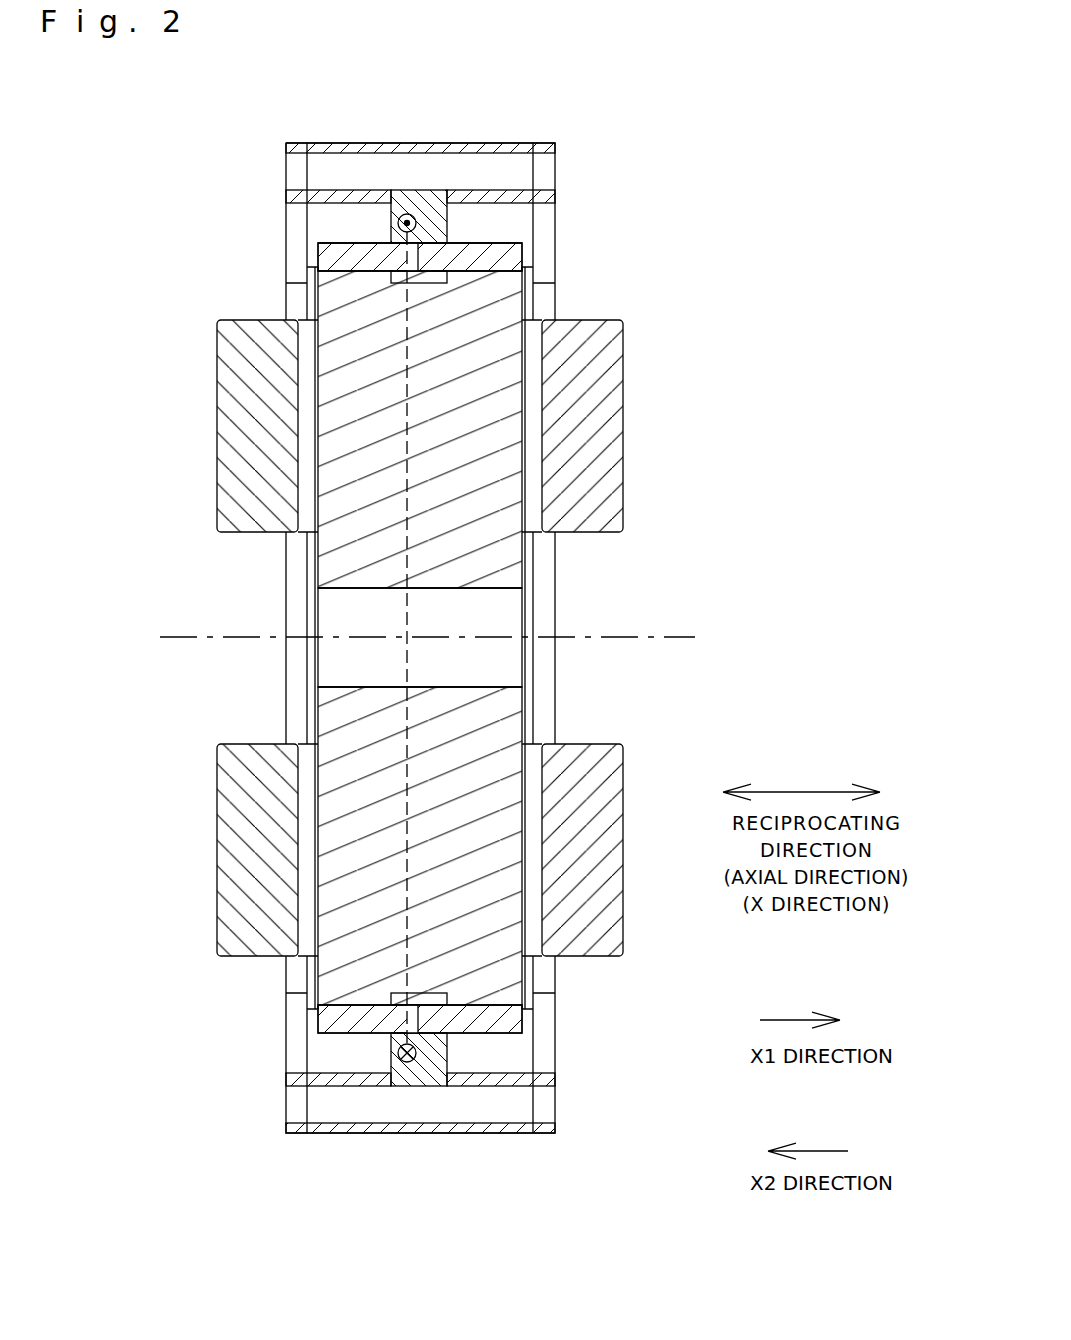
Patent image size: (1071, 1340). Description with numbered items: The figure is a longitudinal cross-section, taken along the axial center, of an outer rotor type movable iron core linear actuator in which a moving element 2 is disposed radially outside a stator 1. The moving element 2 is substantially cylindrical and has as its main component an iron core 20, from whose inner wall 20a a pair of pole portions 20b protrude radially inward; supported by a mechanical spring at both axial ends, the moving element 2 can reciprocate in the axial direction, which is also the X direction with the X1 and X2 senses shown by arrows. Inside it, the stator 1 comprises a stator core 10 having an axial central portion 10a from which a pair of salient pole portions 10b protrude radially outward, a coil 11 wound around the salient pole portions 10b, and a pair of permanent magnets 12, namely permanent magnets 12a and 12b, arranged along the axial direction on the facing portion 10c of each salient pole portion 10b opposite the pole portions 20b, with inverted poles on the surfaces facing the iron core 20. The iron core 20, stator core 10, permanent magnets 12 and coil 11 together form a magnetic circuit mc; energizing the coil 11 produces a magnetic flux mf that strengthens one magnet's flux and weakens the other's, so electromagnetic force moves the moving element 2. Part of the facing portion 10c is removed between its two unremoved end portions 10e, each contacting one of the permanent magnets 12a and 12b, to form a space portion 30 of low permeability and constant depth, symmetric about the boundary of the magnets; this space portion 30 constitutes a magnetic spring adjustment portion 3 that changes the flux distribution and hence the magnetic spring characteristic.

The stator 1 is at (492, 642).
The moving element 2 is at (455, 642).
The magnetic spring adjustment portion 3 is at (465, 663).
The stator core 10 is at (426, 640).
The axial central portion 10a is at (505, 603).
The salient pole portion 10b is at (340, 430).
The facing portion 10c is at (536, 300).
The end portion 10e is at (315, 295).
The coil 11 is at (235, 378).
The permanent magnet 12 is at (419, 663).
The permanent magnet 12a is at (313, 258).
The permanent magnet 12b is at (527, 252).
The iron core 20 is at (420, 642).
The inner wall 20a is at (388, 215).
The pole portion 20b is at (437, 212).
The space portion 30 is at (437, 284).
The magnetic circuit mc is at (735, 470).
The magnetic flux mf is at (407, 600).